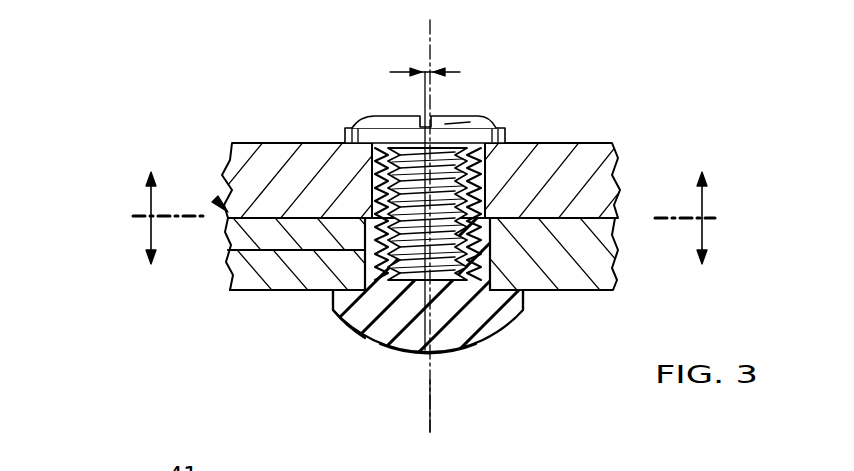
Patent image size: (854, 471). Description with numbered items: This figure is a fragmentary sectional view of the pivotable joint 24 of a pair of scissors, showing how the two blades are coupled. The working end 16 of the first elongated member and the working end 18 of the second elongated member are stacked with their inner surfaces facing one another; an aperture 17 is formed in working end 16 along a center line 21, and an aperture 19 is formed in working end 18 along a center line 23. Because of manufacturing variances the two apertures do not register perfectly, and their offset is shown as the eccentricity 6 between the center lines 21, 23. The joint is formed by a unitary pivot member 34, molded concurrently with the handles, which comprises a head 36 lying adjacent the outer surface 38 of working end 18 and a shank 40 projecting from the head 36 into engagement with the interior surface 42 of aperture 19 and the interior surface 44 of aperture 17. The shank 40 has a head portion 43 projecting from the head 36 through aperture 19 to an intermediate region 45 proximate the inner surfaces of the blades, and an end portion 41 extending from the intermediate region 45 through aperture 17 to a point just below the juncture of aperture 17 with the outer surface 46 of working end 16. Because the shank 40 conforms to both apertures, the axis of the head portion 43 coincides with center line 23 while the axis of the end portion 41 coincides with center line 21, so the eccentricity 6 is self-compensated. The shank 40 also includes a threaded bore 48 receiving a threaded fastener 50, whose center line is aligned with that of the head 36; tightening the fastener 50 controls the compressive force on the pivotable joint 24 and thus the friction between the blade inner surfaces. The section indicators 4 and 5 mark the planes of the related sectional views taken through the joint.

The working end 16 is at (254, 165).
The aperture 17 is at (568, 143).
The working end 18 is at (242, 272).
The aperture 19 is at (533, 300).
The center line 21 is at (430, 31).
The center line 23 is at (428, 412).
The pivotable joint 24 is at (343, 337).
The pivot member 34 is at (386, 355).
The head 36 is at (487, 340).
The outer surface 38 is at (614, 296).
The shank 40 is at (480, 200).
The end portion 41 is at (403, 166).
The interior surface 42 is at (312, 292).
The head portion 43 is at (228, 260).
The interior surface 44 is at (375, 175).
The intermediate region 45 is at (222, 208).
The outer surface 46 is at (600, 143).
The threaded bore 48 is at (400, 133).
The fastener 50 is at (478, 124).
The eccentricity 6 is at (426, 87).
The section line 4- 4 is at (426, 215).
The section line 5- 5 is at (426, 240).